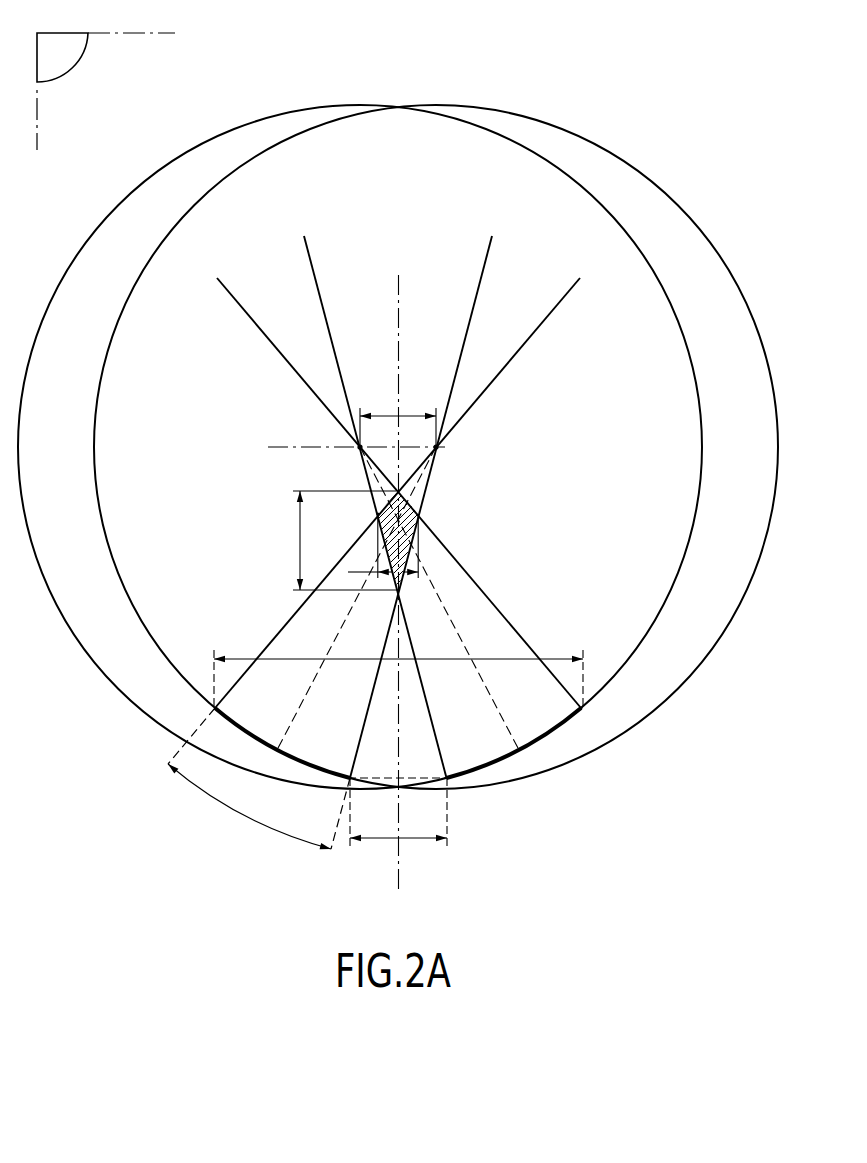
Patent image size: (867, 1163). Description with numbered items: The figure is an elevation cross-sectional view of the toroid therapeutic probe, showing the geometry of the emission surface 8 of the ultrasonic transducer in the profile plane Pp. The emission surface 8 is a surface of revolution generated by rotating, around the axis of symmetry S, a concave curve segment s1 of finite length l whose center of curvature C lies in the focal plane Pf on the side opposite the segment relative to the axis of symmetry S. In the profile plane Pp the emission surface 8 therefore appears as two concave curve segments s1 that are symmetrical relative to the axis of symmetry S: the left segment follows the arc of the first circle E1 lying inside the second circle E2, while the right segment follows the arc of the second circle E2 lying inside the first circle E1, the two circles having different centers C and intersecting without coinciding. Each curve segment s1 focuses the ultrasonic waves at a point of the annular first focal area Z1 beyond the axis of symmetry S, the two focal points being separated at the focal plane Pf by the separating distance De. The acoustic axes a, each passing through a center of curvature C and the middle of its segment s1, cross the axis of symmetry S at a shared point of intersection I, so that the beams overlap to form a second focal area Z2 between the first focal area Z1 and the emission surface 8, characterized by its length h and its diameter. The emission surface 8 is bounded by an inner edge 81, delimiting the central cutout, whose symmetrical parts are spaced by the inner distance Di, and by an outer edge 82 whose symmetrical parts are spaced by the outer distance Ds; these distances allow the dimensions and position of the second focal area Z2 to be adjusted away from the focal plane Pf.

The profile plane Pp is at (57, 45).
The first circle E1 is at (94, 443).
The second circle E2 is at (703, 447).
The axis of symmetry S is at (398, 350).
The focal plane Pf is at (274, 445).
The emission surface 8 is at (515, 647).
The concave curve segment s1 is at (278, 747).
The acoustic axis a is at (341, 637).
The first focal area Z1 is at (443, 448).
The center of curvature C is at (440, 452).
The separating distance De is at (398, 419).
The length of the second focal area h is at (339, 540).
The second focal area Z2 is at (407, 514).
The point of intersection I is at (392, 514).
The outer distance Ds is at (398, 672).
The inner distance Di is at (398, 812).
The length of the concave curve segment l is at (249, 806).
The inner edge 81 is at (352, 777).
The outer edge 82 is at (583, 708).